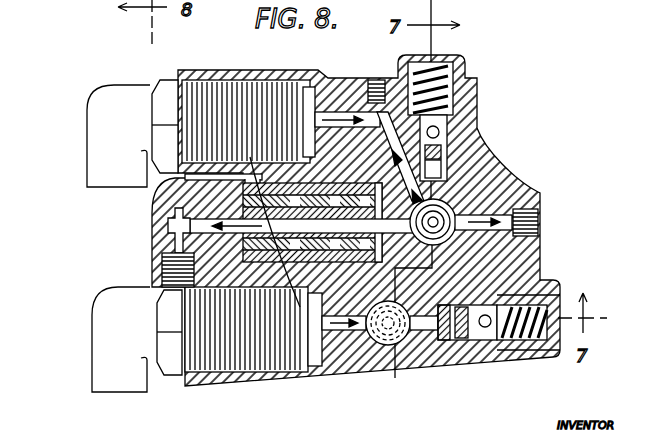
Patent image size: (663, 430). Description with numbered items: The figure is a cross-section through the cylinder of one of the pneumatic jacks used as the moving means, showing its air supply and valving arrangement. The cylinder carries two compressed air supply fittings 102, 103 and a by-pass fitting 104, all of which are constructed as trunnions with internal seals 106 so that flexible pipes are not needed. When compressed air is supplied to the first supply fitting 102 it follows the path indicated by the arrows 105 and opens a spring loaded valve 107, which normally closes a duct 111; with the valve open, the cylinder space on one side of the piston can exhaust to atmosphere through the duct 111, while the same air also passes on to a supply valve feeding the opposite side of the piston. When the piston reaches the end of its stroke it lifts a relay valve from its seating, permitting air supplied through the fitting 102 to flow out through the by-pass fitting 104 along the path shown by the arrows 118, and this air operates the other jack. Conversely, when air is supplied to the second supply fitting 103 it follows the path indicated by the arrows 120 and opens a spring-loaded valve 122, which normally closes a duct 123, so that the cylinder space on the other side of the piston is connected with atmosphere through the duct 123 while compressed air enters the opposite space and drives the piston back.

The compressed air supply fitting 102 is at (100, 135).
The compressed air supply fitting 103 is at (105, 343).
The by-pass fitting 104 is at (152, 247).
The arrows 105 is at (343, 82).
The internal seals 106 is at (233, 280).
The spring loaded valve 107 is at (447, 134).
The duct 111 is at (455, 128).
The arrows 118 is at (247, 230).
The arrows 120 is at (388, 346).
The spring-loaded valve 122 is at (480, 333).
The duct 123 is at (503, 336).